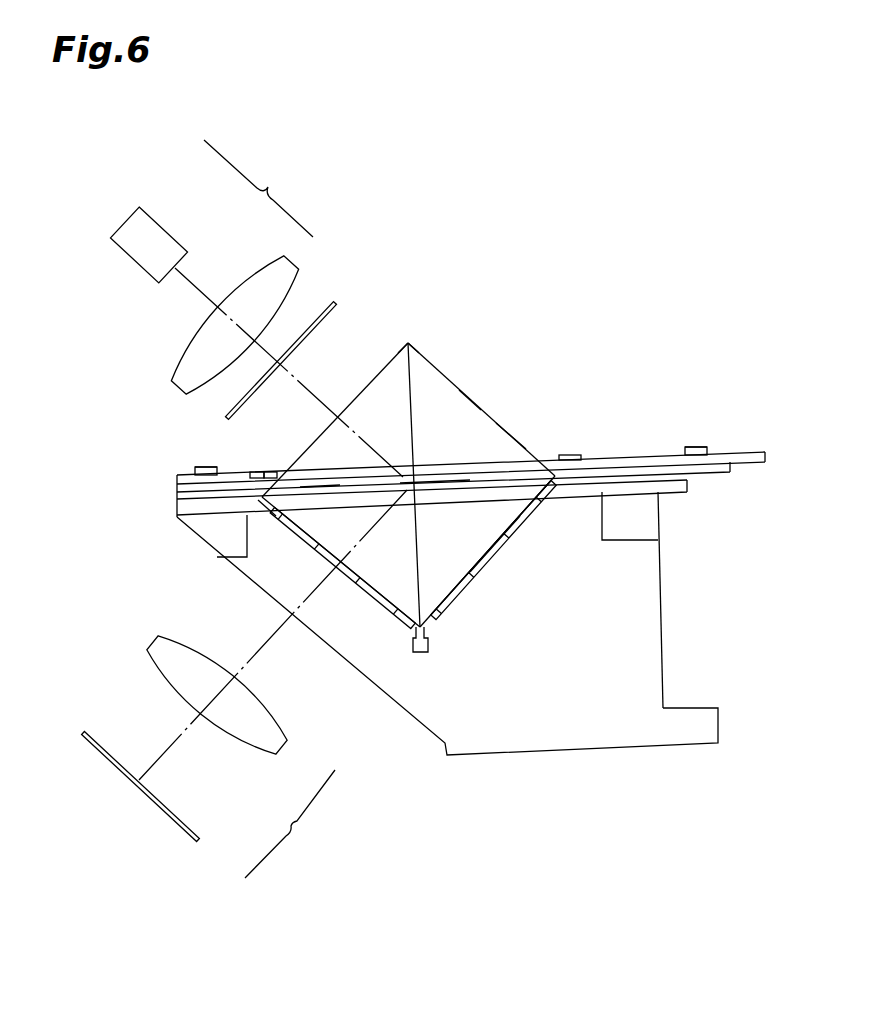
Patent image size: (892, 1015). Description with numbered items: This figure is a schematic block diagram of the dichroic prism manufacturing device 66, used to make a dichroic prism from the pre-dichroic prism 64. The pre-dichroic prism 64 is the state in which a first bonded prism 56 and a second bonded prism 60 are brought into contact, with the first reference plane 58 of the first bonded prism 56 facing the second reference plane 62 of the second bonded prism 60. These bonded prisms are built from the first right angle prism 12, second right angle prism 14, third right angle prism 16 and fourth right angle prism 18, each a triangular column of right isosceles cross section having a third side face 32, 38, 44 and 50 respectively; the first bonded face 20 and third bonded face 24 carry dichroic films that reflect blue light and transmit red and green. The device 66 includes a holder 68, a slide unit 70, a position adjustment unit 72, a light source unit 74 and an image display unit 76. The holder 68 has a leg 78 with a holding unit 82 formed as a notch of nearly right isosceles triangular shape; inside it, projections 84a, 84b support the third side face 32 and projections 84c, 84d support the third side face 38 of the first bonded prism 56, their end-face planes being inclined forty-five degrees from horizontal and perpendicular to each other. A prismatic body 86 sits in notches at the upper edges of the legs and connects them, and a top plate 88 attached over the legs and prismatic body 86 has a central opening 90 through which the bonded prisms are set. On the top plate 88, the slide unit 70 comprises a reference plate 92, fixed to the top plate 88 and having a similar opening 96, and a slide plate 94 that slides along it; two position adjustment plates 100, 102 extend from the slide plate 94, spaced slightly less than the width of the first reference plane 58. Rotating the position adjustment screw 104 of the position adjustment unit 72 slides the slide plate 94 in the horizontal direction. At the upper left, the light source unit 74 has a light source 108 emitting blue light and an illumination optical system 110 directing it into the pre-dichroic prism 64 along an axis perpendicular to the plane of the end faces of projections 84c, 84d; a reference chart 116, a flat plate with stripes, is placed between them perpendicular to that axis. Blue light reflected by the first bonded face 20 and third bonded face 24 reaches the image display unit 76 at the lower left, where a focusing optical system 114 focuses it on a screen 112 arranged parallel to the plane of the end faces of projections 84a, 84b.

The first right angle prism 12 is at (336, 558).
The second right angle prism 14 is at (490, 548).
The third right angle prism 16 is at (400, 357).
The fourth right angle prism 18 is at (420, 357).
The first bonded face 20 is at (445, 378).
The third bonded face 24 is at (427, 657).
The third side face 32 is at (362, 588).
The third side face 38 is at (492, 574).
The third side face 44 is at (367, 384).
The third side face 50 is at (520, 433).
The first bonded prism 56 is at (508, 527).
The first reference plane 58 is at (323, 485).
The second bonded prism 60 is at (478, 412).
The second reference plane 62 is at (453, 487).
The pre-dichroic prism 64 is at (408, 342).
The dichroic prism manufacturing device 66 is at (692, 264).
The holder 68 is at (663, 628).
The slide unit 70 is at (729, 470).
The position adjustment unit 72 is at (204, 467).
The light source unit 74 is at (258, 188).
The image display unit 76 is at (290, 824).
The leg 78 is at (703, 728).
The holding unit 82 is at (497, 557).
The projection 84a is at (280, 519).
The projection 84b is at (395, 614).
The projection 84c is at (442, 615).
The projection 84d is at (551, 505).
The prismatic body 86 is at (197, 530).
The top plate 88 is at (687, 486).
The opening 90 is at (270, 512).
The reference plate 92 is at (727, 480).
The slide plate 94 is at (760, 452).
The opening 96 is at (250, 473).
The position adjustment plate 100 is at (272, 473).
The position adjustment plate 102 is at (565, 460).
The position adjustment screw 104 is at (195, 468).
The light source 108 is at (151, 207).
The illumination optical system 110 is at (272, 263).
The screen 112 is at (117, 767).
The focusing optical system 114 is at (152, 648).
The reference chart 116 is at (333, 300).